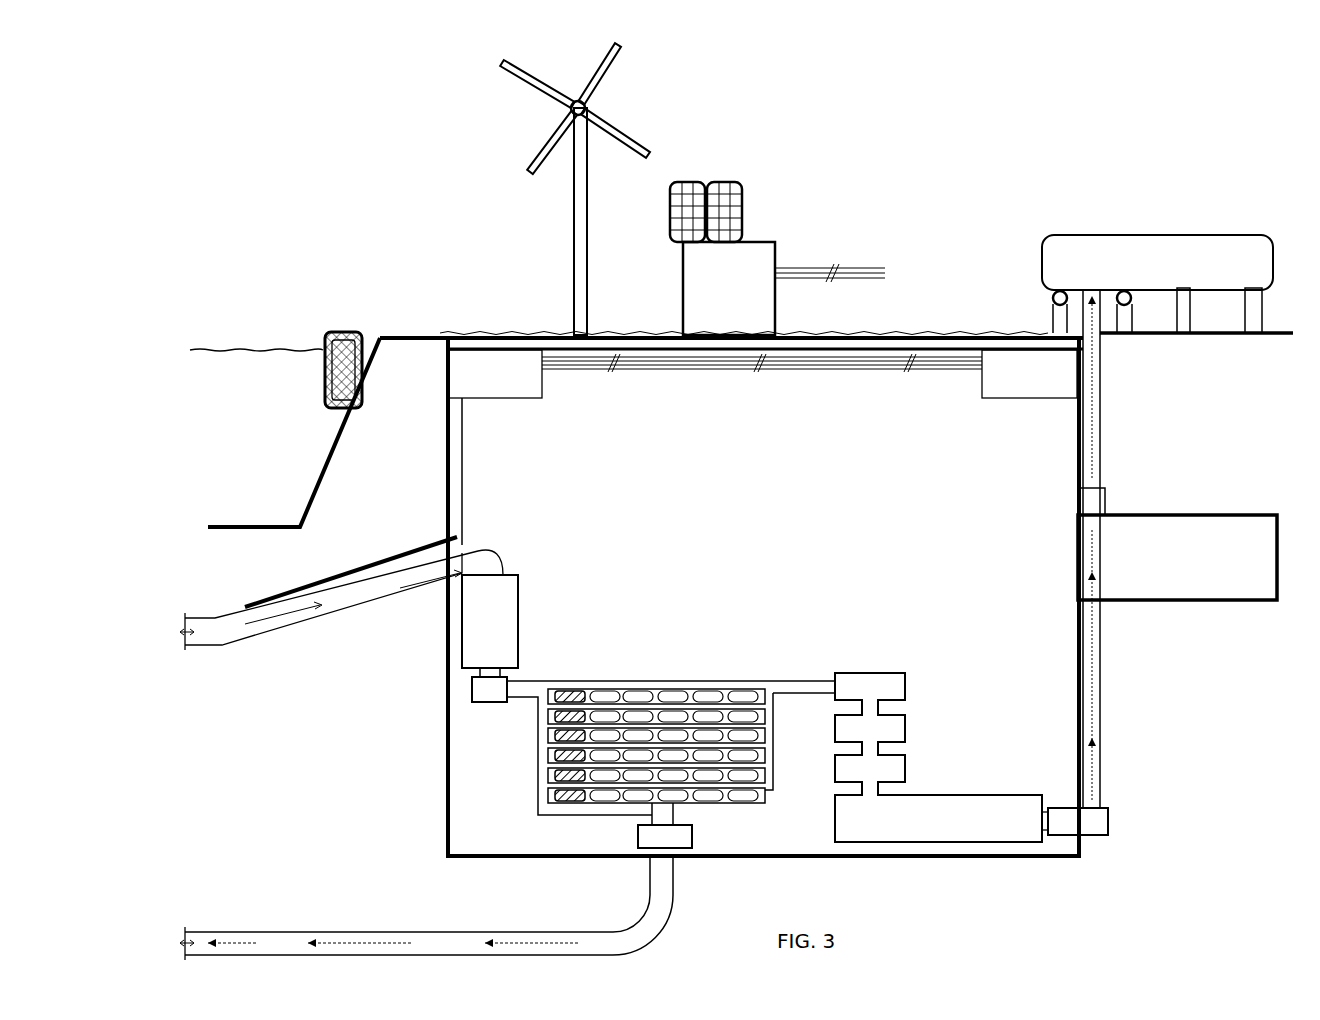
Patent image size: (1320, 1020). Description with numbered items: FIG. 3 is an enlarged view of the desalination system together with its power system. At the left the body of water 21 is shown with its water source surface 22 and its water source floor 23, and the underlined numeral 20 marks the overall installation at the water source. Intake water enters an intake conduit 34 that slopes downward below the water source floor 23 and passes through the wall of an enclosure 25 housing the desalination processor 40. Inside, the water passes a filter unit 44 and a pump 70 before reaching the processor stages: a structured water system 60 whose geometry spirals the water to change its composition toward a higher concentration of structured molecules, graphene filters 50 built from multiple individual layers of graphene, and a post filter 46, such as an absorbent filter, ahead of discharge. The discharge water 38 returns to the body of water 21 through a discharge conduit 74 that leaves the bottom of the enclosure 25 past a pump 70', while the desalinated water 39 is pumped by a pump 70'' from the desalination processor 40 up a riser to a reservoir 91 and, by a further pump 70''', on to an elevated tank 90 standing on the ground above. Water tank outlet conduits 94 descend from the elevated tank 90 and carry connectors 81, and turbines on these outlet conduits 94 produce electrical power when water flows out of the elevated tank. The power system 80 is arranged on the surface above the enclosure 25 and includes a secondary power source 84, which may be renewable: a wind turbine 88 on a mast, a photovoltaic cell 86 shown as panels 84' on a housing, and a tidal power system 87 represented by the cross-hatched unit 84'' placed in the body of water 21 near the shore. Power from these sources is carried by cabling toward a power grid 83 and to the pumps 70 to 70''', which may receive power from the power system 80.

The body of water 20 is at (278, 416).
The body of water 21 is at (202, 354).
The water source surface 22 is at (260, 338).
The water source floor 23 is at (342, 537).
The underground chamber 25 is at (482, 335).
The intake conduit 34 is at (373, 592).
The discharge water 38 is at (276, 939).
The desalinated water 39 is at (1102, 676).
The desalination processor 40 is at (833, 670).
The filter 44 is at (498, 610).
The post filter 46 is at (886, 684).
The graphene filters 50 is at (635, 695).
The structured water system 60 is at (565, 693).
The pump 70 is at (445, 692).
The pump 70' is at (698, 831).
The pump 70'' is at (1114, 812).
The valve 70''' is at (1121, 467).
The discharge conduit 74 is at (592, 938).
The power system 80 is at (800, 183).
The connector 81 is at (1052, 298).
The power grid 83 is at (882, 268).
The secondary power source 84 is at (570, 189).
The solar panel 84' is at (706, 185).
The water turbine 84'' is at (368, 337).
The photovoltaic cell 86 is at (747, 208).
The tidal power system 87 is at (343, 330).
The wind turbine 88 is at (586, 110).
The elevated tank 90 is at (1124, 258).
The reservoir 91 is at (1161, 544).
The water tank outlet conduits 94 is at (1126, 313).